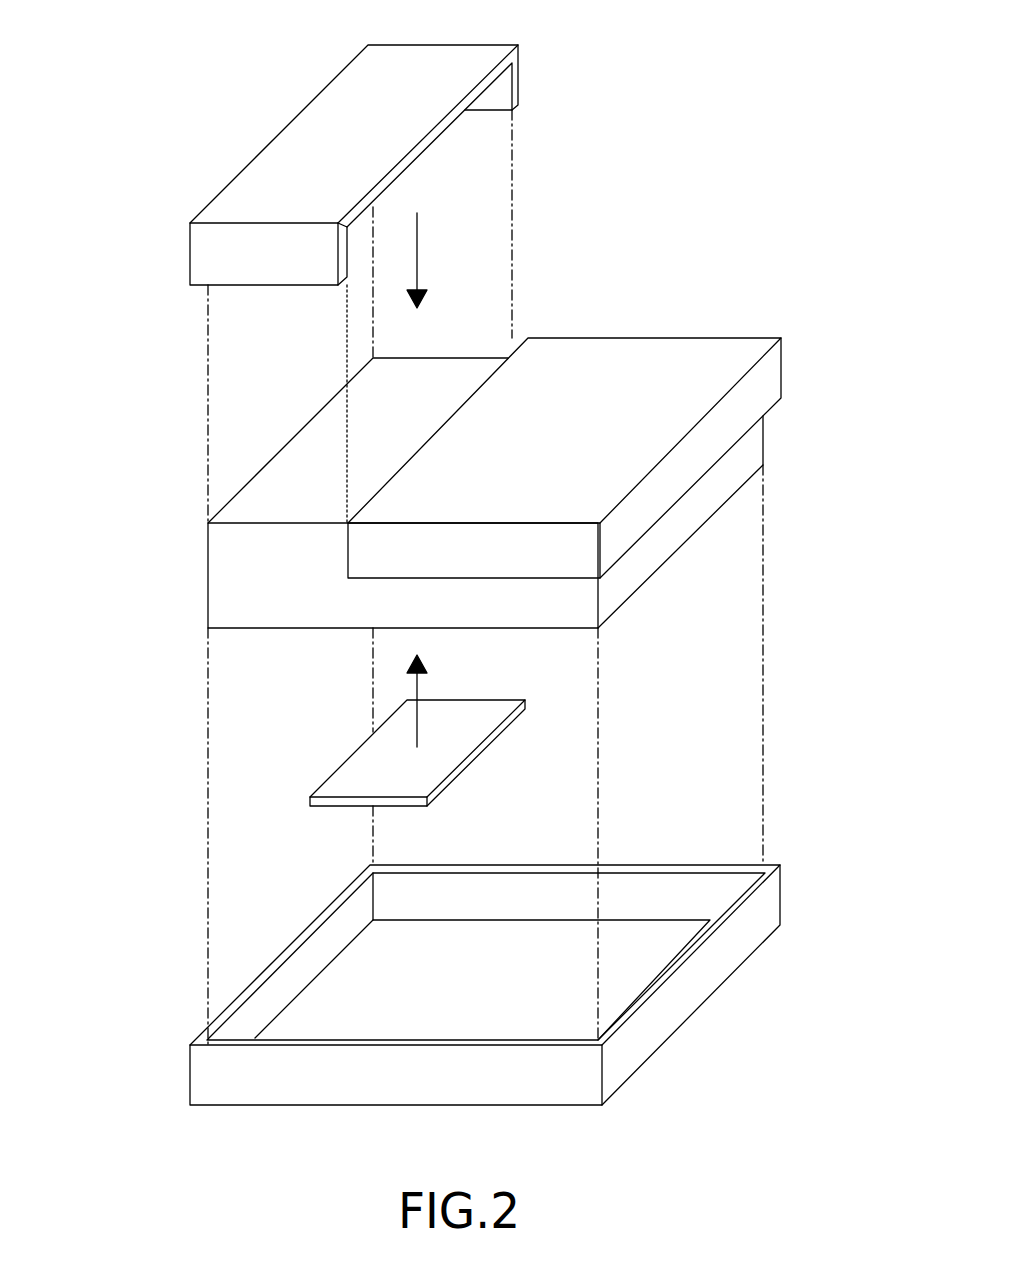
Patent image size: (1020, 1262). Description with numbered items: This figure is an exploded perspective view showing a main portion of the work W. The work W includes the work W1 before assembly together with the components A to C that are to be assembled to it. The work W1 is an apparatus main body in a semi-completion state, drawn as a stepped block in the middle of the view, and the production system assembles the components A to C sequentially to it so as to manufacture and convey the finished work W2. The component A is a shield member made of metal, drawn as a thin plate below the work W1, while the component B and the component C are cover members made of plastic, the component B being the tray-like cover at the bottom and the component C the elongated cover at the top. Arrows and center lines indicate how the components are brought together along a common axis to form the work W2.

The work W is at (712, 88).
The work before assembly W1 is at (795, 337).
The work W2 is at (150, 216).
The component A is at (480, 747).
The component B is at (693, 992).
The component C is at (518, 73).